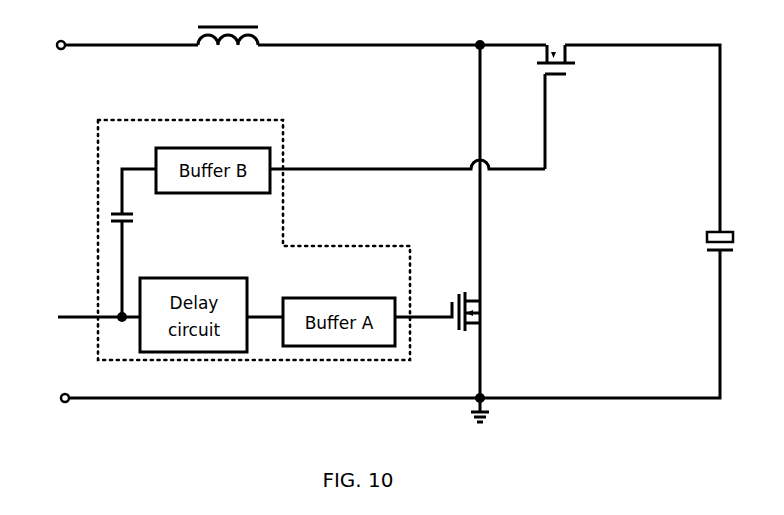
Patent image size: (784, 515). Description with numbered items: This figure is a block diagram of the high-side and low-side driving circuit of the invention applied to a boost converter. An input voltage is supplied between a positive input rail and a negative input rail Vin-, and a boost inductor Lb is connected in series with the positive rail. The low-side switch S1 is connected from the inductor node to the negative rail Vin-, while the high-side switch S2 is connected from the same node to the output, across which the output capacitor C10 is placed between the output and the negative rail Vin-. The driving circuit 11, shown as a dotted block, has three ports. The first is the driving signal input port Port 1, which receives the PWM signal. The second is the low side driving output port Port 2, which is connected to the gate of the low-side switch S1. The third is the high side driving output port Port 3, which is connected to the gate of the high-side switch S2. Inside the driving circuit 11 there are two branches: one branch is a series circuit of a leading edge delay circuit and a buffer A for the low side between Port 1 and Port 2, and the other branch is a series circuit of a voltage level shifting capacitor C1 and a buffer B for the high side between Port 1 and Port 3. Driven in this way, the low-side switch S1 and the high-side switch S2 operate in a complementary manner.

The driving circuit 11 is at (100, 132).
The boost inductor Lb is at (228, 25).
The low-side switch S1 is at (449, 311).
The high-side switch S2 is at (556, 107).
The voltage level shifting capacitor C1 is at (136, 265).
The output capacitor C10 is at (698, 242).
The driving signal input port Port 1 is at (82, 318).
The low side driving output port Port 2 is at (430, 330).
The high side driving output port Port 3 is at (300, 171).
The PWM signal PWM is at (88, 302).
The negative input terminal Vin- is at (45, 398).